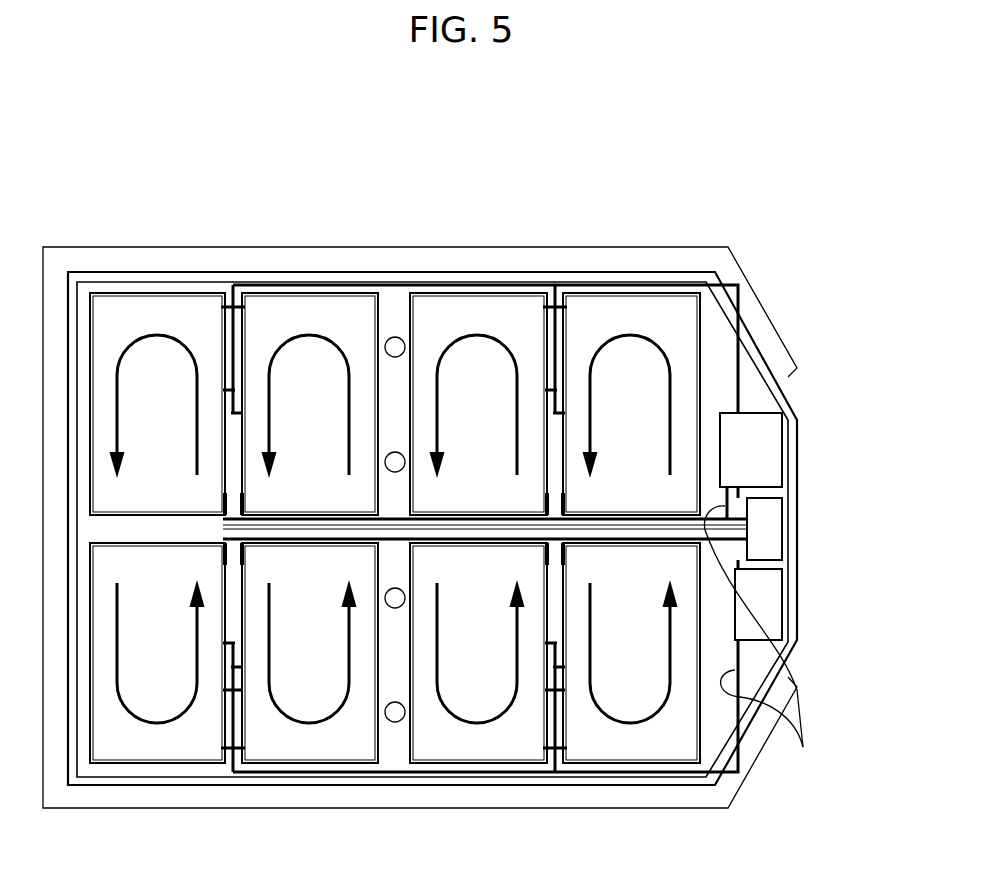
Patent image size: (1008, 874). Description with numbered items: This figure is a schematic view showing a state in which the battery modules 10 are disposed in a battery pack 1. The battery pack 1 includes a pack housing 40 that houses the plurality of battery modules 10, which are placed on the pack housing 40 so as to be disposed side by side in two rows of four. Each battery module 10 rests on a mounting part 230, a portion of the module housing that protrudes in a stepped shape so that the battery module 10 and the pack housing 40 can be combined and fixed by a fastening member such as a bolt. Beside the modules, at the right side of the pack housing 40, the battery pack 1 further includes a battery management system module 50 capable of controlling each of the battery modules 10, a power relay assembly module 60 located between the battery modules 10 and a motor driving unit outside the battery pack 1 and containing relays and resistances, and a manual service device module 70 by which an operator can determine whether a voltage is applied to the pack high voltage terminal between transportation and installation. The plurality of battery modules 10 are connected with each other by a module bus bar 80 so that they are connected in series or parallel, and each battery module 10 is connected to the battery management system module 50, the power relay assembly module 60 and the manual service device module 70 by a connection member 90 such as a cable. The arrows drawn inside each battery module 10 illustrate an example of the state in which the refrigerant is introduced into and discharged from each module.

The battery pack 1 is at (44, 126).
The battery module 10 is at (697, 318).
The pack housing 40 is at (628, 252).
The mounting part 230 is at (703, 395).
The battery management system (BMS) module 50 is at (773, 599).
The power relay assembly (PRA) module 60 is at (773, 448).
The manual service device (MSD) module 70 is at (773, 526).
The module bus bar 80 is at (222, 747).
The connection member 90 is at (761, 644).